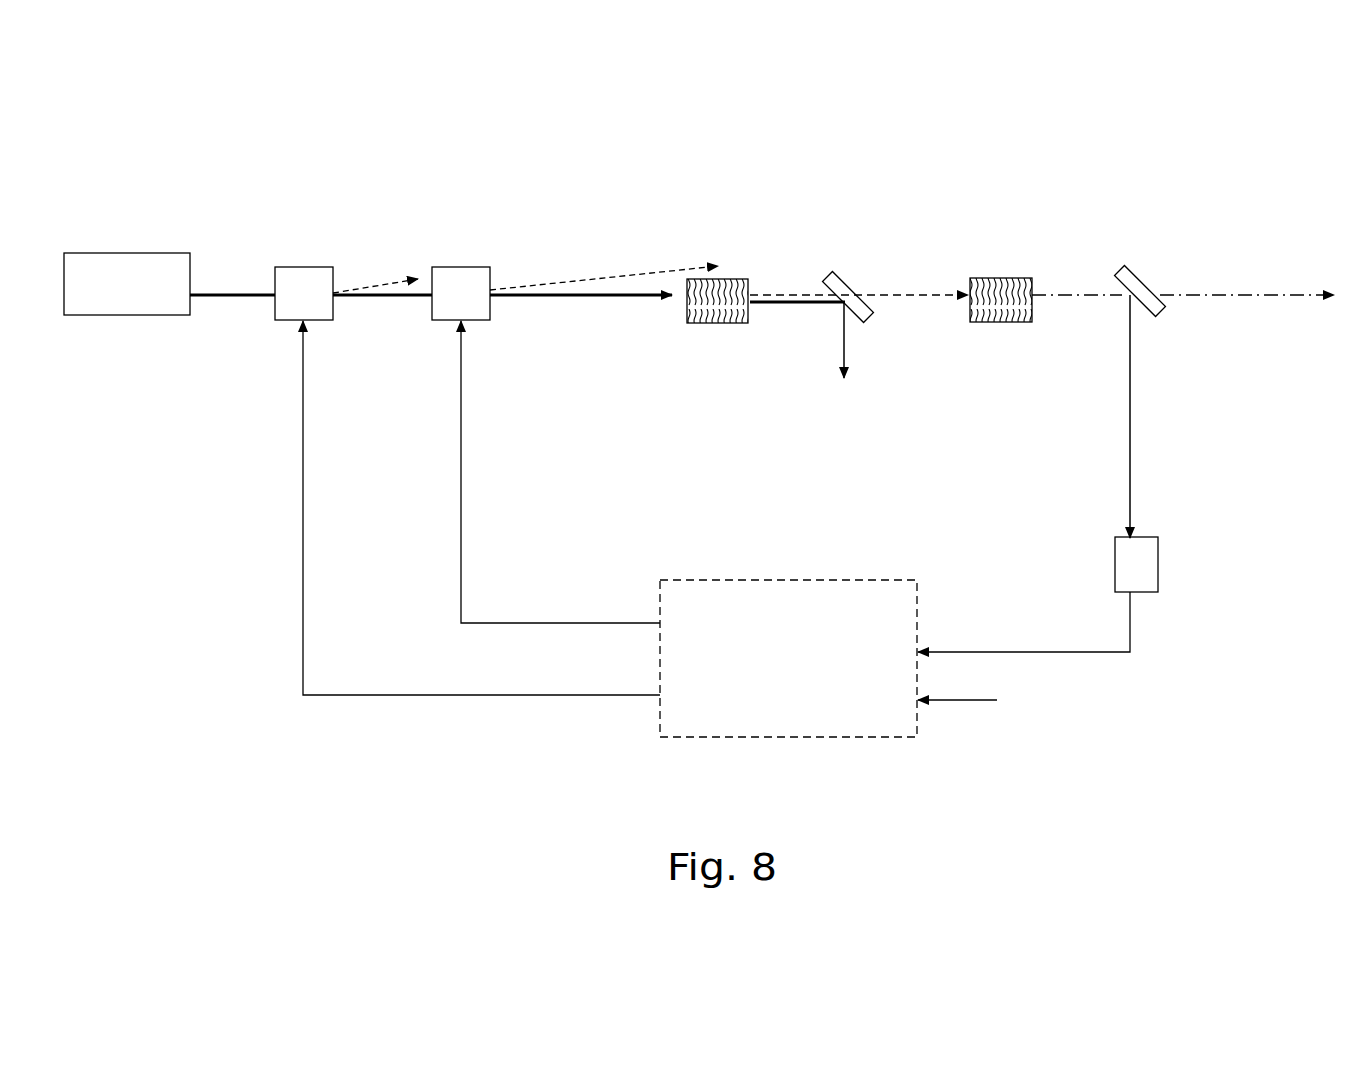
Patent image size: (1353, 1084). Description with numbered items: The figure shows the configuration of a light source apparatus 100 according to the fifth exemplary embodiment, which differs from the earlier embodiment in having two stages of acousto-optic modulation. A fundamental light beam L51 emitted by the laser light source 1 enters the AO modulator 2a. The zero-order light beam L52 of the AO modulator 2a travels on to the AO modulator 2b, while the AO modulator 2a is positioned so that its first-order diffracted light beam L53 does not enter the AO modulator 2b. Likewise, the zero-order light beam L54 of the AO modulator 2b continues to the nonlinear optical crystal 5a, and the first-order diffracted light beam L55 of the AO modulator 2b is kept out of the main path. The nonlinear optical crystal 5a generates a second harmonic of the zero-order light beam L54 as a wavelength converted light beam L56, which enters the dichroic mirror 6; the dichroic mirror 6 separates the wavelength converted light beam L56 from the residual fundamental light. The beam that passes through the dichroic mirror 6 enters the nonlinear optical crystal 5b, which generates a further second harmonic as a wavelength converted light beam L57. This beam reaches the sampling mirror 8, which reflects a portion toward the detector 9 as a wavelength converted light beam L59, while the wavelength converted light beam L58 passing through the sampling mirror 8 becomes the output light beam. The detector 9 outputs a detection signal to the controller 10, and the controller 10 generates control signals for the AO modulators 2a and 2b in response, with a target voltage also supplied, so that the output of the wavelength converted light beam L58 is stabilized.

The light source apparatus 100 is at (168, 123).
The laser light source 1 is at (95, 253).
The AO modulator 2a is at (298, 267).
The AO modulator 2b is at (455, 267).
The nonlinear optical crystal 5a is at (700, 325).
The nonlinear optical crystal 5b is at (990, 278).
The dichroic mirror 6 is at (848, 275).
The sampling mirror 8 is at (1155, 318).
The detector 9 is at (1158, 565).
The controller 10 is at (785, 578).
The fundamental light beam L51 is at (222, 297).
The zero-order light beam L52 is at (366, 297).
The first-order diffracted light beam L53 is at (392, 262).
The zero-order light beam L54 is at (545, 297).
The first-order diffracted light beam L55 is at (568, 262).
The wavelength converted light beam L56 is at (762, 292).
The wavelength converted light beam L57 is at (1073, 292).
The wavelength converted light beam L58 is at (1245, 292).
The wavelength converted light beam L59 is at (1132, 483).